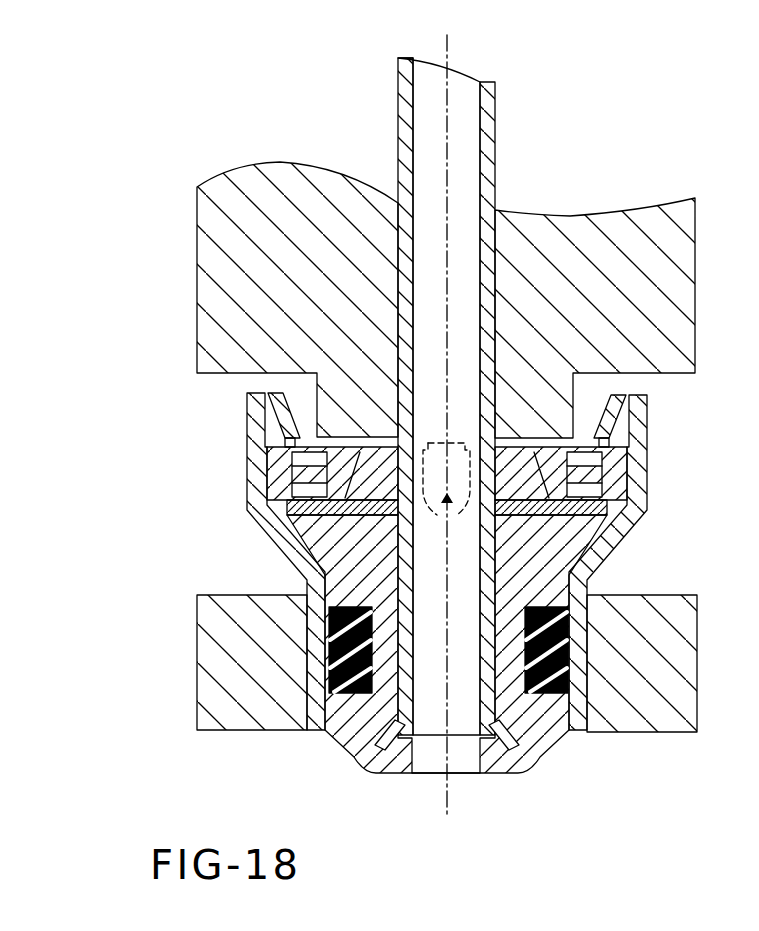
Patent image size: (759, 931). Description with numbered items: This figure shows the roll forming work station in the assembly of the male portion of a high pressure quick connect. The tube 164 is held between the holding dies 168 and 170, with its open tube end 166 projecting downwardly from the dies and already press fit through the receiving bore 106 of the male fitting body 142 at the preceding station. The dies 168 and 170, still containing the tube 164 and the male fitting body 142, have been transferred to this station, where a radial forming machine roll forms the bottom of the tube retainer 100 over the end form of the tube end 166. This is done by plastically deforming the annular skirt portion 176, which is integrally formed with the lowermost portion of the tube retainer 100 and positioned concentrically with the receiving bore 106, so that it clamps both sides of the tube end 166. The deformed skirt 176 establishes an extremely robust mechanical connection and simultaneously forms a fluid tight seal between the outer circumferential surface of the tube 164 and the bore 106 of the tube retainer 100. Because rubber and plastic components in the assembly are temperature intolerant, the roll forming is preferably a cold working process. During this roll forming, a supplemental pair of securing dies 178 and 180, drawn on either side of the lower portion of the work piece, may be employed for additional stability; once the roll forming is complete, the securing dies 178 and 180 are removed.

The tube retainer 100 is at (362, 732).
The receiving bore 106 is at (498, 438).
The male fitting body 142 is at (216, 472).
The tube 164 is at (495, 152).
The tube end 166 is at (365, 758).
The holding die 168 is at (212, 254).
The holding die 170 is at (682, 293).
The annular skirt portion 176 is at (400, 755).
The securing die 178 is at (213, 608).
The securing die 180 is at (663, 612).